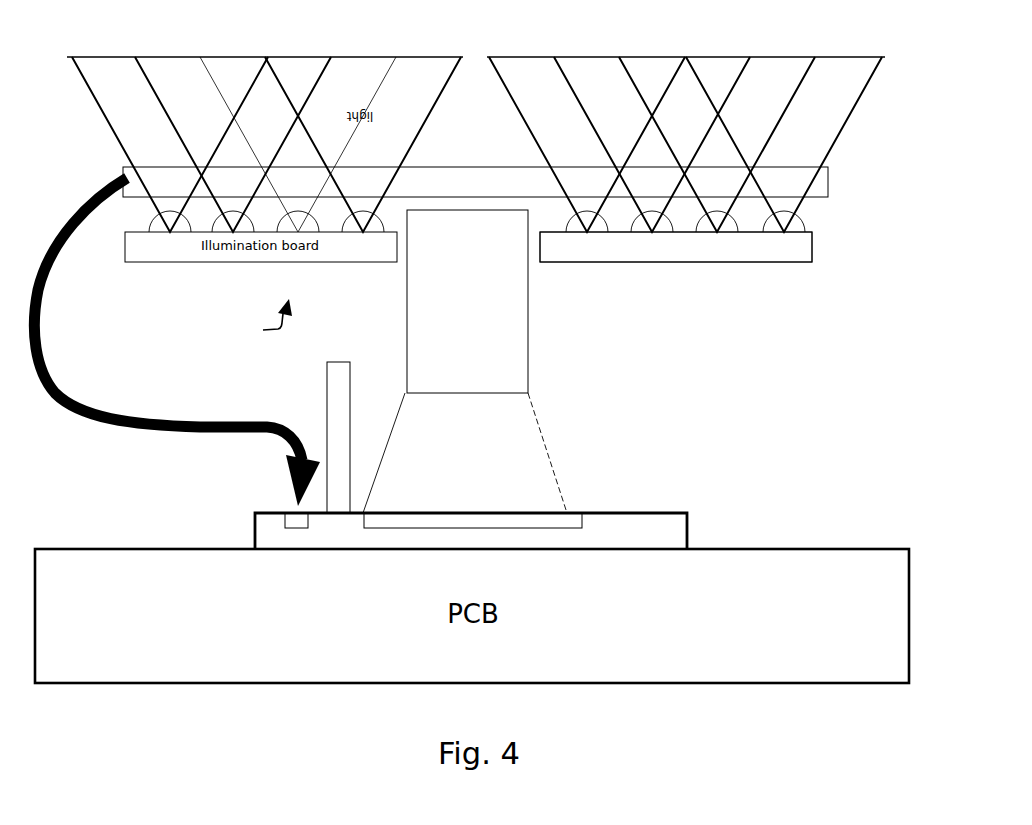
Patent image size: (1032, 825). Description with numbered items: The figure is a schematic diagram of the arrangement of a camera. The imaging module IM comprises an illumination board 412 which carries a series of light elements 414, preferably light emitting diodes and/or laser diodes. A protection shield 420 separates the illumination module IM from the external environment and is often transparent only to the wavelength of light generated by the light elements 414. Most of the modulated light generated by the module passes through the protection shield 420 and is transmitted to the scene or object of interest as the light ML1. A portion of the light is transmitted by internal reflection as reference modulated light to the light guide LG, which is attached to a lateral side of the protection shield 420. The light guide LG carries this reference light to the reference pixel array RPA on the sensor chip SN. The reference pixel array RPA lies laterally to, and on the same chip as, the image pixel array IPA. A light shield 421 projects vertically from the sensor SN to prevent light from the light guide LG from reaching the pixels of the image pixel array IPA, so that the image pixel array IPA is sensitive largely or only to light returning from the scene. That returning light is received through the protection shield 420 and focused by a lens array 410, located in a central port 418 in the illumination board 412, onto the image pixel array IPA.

The protection shield 420 is at (437, 165).
The light elements 414 is at (248, 225).
The central port 418 is at (538, 256).
The illumination board 412 is at (635, 261).
The lens array 410 is at (467, 301).
The light shield 421 is at (327, 387).
The modulated light transmitted to the scene ML1 is at (814, 128).
The imaging module IM is at (263, 321).
The light guide LG is at (42, 307).
The sensor chip SN is at (687, 514).
The reference pixel array RPA is at (282, 517).
The image pixel array IPA is at (486, 510).